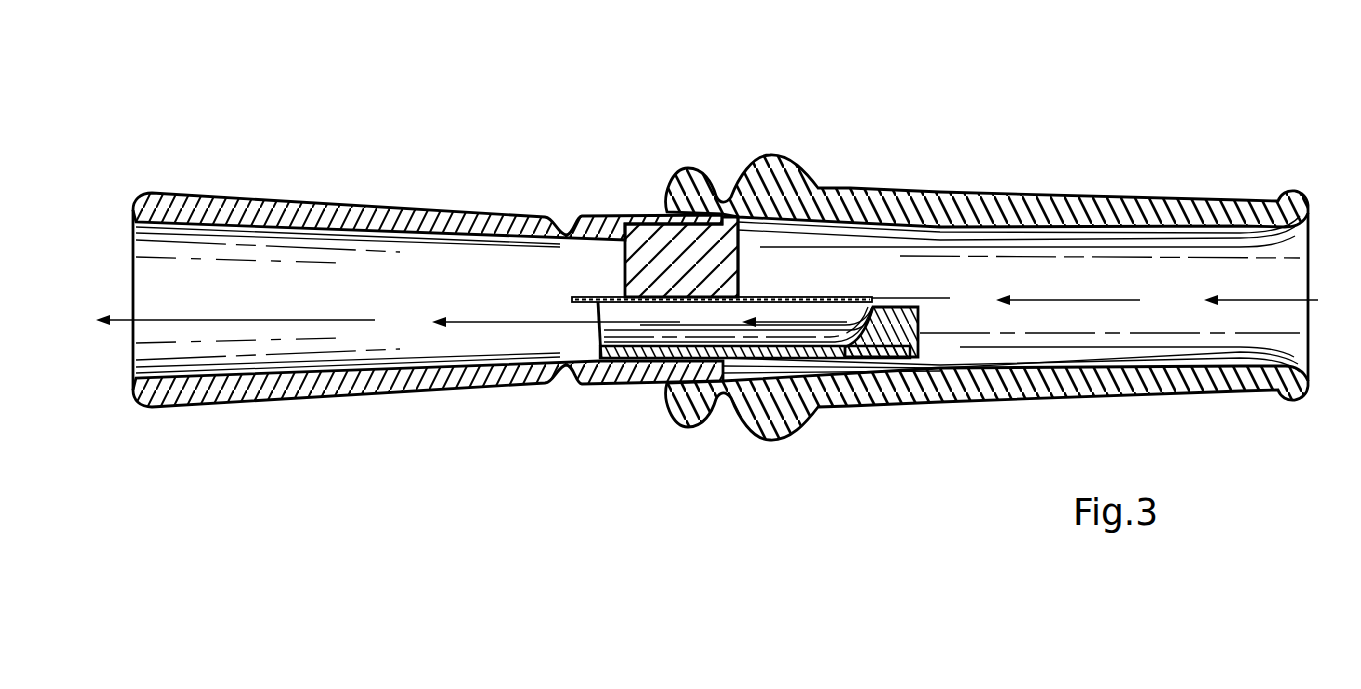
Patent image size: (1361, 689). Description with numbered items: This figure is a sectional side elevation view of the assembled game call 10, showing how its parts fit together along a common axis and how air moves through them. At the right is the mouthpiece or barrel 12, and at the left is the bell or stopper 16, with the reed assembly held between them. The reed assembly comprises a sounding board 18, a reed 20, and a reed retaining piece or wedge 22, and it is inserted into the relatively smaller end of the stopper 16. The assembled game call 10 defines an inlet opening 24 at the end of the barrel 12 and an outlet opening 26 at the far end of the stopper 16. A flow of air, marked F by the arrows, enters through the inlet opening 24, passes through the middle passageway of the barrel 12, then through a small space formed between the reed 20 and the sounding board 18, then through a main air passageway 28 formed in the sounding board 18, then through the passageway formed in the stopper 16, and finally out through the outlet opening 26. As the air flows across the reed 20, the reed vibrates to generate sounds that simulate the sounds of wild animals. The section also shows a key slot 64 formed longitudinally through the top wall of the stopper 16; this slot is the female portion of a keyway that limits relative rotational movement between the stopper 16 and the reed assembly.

The game call 10 is at (862, 116).
The barrel 12 is at (968, 188).
The stopper 16 is at (331, 200).
The sounding board 18 is at (926, 335).
The reed 20 is at (816, 288).
The wedge 22 is at (748, 264).
The inlet opening 24 is at (1312, 245).
The outlet opening 26 is at (143, 343).
The main air passageway 28 is at (637, 342).
The key slot 64 is at (613, 228).